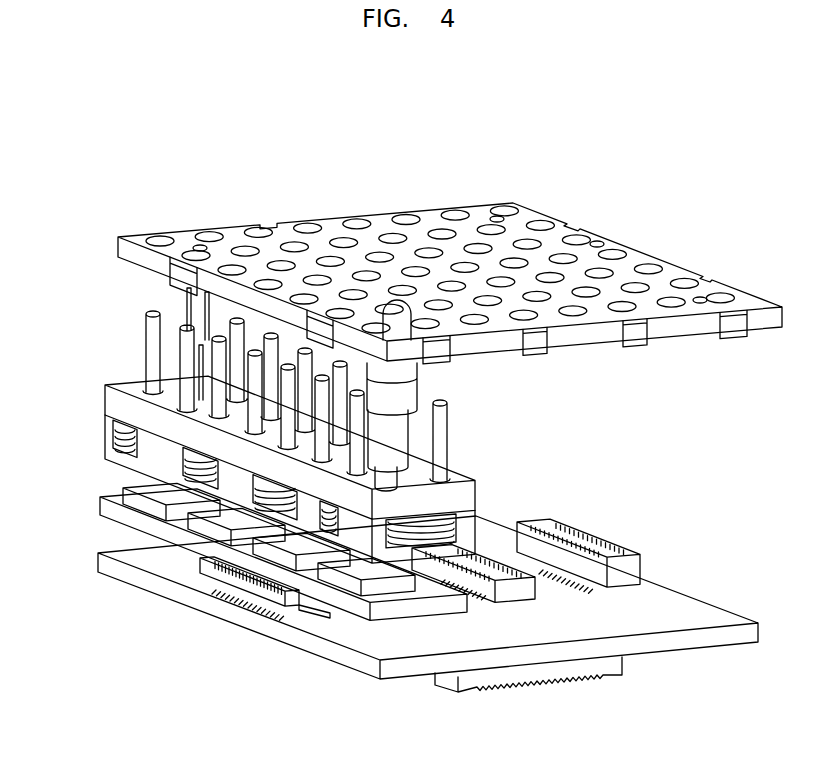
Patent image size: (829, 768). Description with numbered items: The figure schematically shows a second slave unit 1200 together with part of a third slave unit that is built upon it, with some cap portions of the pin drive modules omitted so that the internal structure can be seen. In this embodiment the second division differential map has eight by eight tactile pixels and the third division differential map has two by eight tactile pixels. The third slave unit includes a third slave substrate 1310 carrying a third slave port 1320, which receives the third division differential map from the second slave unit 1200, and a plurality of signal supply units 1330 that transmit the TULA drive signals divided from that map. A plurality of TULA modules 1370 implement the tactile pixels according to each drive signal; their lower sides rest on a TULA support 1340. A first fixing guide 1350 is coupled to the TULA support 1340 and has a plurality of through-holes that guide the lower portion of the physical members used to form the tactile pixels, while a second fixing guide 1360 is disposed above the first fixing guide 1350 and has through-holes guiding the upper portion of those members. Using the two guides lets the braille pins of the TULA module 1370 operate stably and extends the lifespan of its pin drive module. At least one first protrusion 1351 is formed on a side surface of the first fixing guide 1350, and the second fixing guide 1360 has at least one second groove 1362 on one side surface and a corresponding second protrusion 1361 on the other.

The second slave unit 1200 is at (140, 577).
The third slave substrate 1310 is at (118, 512).
The third slave port 1320 is at (215, 573).
The signal supply unit 1330 is at (120, 482).
The TULA support 1340 is at (118, 440).
The first fixing guide 1350 is at (118, 392).
The first protrusion 1351 is at (128, 402).
The second fixing guide 1360 is at (437, 275).
The second protrusion 1361 is at (635, 340).
The second groove 1362 is at (370, 206).
The TULA module 1370 is at (412, 388).